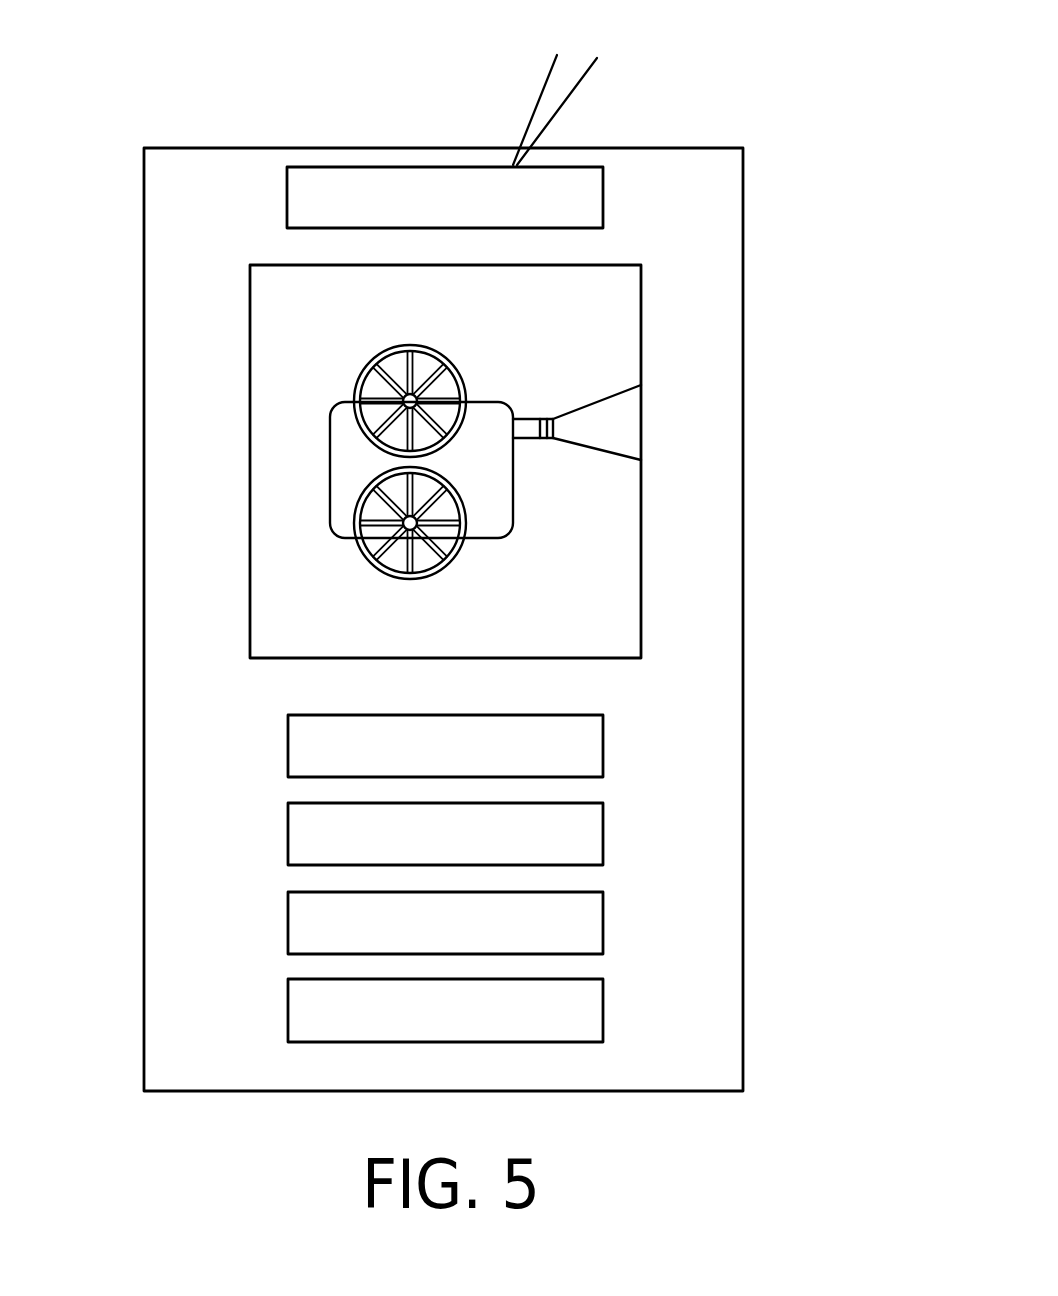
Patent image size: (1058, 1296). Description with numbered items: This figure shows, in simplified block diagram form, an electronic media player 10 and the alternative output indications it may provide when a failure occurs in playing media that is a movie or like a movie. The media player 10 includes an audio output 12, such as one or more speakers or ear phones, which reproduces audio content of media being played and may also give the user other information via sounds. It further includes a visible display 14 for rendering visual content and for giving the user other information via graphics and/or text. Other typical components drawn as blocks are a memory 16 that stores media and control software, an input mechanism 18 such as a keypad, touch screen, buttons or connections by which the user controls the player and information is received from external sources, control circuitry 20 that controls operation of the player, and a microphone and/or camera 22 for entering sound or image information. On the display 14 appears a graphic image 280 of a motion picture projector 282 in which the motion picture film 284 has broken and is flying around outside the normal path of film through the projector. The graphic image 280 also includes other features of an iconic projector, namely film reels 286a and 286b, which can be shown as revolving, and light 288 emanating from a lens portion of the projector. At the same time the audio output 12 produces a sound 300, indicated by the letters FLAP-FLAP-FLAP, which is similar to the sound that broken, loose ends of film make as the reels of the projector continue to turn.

The electronic media player 10 is at (143, 232).
The audio output 12 is at (603, 197).
The visible display 14 is at (641, 298).
The memory 16 is at (603, 743).
The input mechanism 18 is at (603, 827).
The control circuitry 20 is at (603, 912).
The microphone and/or camera 22 is at (603, 993).
The graphic image 280 is at (280, 642).
The motion picture projector 282 is at (337, 401).
The motion picture film 284 is at (460, 367).
The film reel 286a is at (409, 345).
The film reel 286b is at (372, 572).
The light 288 is at (584, 403).
The sound 300 is at (809, 81).